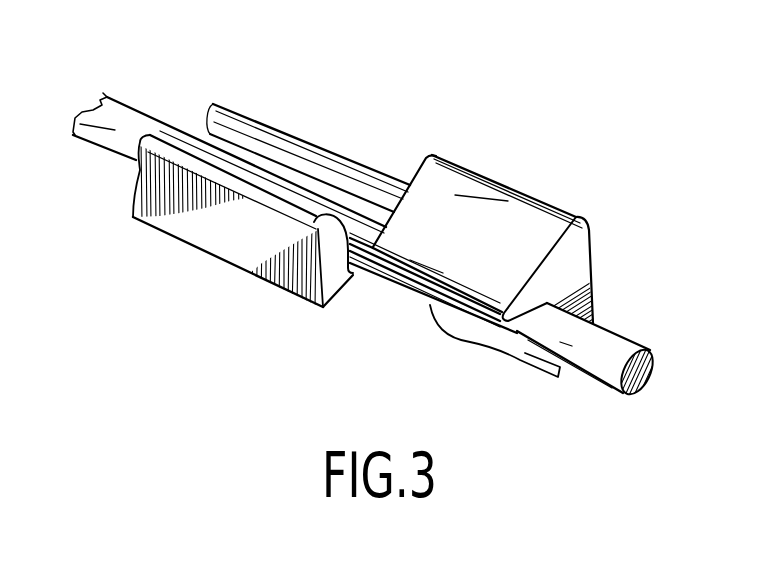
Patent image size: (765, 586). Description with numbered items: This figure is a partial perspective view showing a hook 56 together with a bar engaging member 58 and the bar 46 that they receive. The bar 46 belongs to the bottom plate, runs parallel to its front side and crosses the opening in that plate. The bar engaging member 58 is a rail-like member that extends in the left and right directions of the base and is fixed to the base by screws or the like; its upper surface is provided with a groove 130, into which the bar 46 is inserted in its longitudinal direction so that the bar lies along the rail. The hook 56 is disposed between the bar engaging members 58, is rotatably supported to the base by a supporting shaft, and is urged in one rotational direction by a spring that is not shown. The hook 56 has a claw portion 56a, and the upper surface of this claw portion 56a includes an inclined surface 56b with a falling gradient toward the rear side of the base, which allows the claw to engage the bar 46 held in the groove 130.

The bar 46 is at (112, 102).
The bar engaging member 58 is at (305, 142).
The groove 130 is at (209, 120).
The hook 56 is at (548, 186).
The claw portion 56a is at (513, 308).
The inclined surface 56b is at (440, 210).